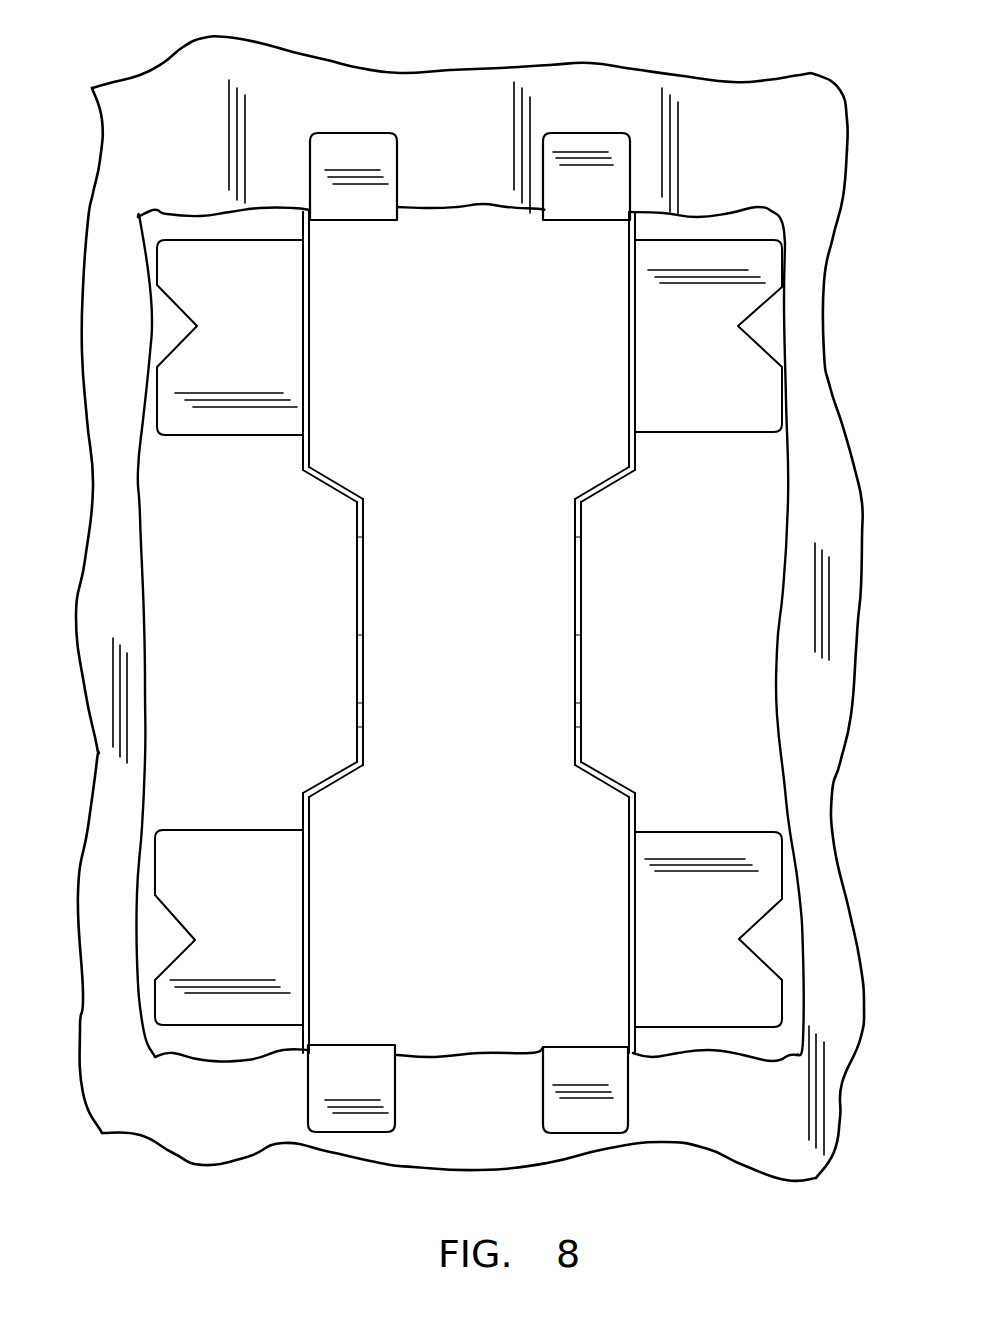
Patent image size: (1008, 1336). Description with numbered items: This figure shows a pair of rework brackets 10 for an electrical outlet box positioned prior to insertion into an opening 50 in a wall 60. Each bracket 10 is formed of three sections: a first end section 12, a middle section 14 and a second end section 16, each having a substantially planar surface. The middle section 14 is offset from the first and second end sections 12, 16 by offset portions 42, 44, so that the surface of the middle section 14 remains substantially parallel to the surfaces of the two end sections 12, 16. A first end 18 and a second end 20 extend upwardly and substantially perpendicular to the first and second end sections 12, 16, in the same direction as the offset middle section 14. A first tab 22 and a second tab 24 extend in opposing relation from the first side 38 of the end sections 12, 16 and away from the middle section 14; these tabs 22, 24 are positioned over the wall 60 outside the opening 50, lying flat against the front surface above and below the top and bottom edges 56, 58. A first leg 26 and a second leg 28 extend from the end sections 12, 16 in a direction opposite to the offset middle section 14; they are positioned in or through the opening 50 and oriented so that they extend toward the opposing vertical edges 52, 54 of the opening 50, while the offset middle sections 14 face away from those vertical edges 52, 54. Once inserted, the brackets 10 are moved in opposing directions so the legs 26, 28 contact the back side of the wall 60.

The bracket 10 is at (211, 175).
The first end section 12 is at (310, 352).
The middle section 14 is at (363, 547).
The second end section 16 is at (622, 322).
The first end 18 is at (330, 218).
The second end 20 is at (598, 222).
The first tab 22 is at (355, 157).
The second tab 24 is at (620, 147).
The first leg 26 is at (182, 380).
The second leg 28 is at (750, 368).
The first side 38 is at (578, 533).
The offset portion 42 is at (335, 478).
The offset portion 44 is at (603, 478).
The opening 50 is at (497, 992).
The opposing vertical edge 52 is at (141, 808).
The opposing vertical edge 54 is at (780, 633).
The top edge 56 is at (494, 205).
The bottom edge 58 is at (433, 1060).
The wall 60 is at (757, 1108).